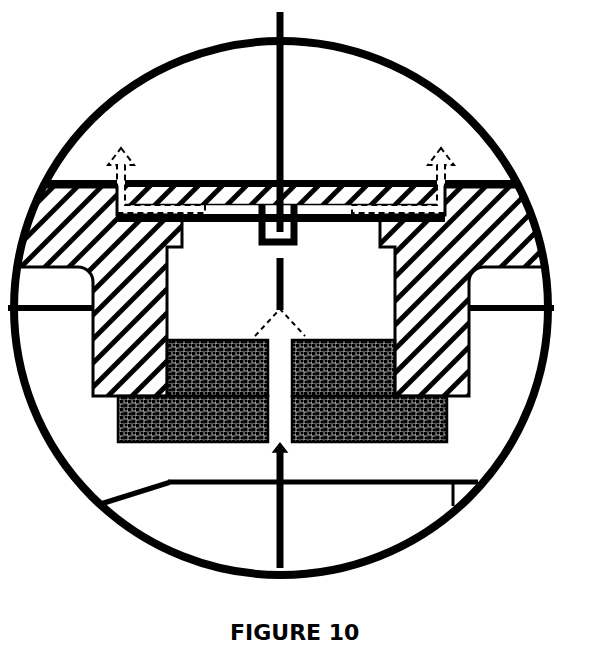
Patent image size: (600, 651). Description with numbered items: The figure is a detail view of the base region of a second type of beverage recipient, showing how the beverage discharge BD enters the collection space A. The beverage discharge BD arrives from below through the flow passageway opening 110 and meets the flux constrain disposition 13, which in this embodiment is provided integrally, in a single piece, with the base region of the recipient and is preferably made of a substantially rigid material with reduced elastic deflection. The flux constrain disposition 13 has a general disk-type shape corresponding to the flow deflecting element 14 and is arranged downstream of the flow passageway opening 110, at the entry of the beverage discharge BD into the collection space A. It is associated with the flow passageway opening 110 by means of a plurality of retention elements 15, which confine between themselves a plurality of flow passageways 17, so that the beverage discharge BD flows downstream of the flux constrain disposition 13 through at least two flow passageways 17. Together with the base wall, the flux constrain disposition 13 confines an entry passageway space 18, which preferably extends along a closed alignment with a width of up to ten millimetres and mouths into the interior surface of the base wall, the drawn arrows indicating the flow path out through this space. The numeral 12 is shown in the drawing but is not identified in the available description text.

The flux constrain disposition 13 is at (320, 178).
The flow deflecting element 14 is at (232, 222).
The entry passageway space 18 is at (143, 178).
The flow passageways 17 is at (290, 240).
The retention elements 15 is at (372, 236).
The flow passageway opening 110 is at (281, 352).
The base 12 is at (288, 451).
The collection space A is at (240, 106).
The beverage discharge BD is at (317, 461).